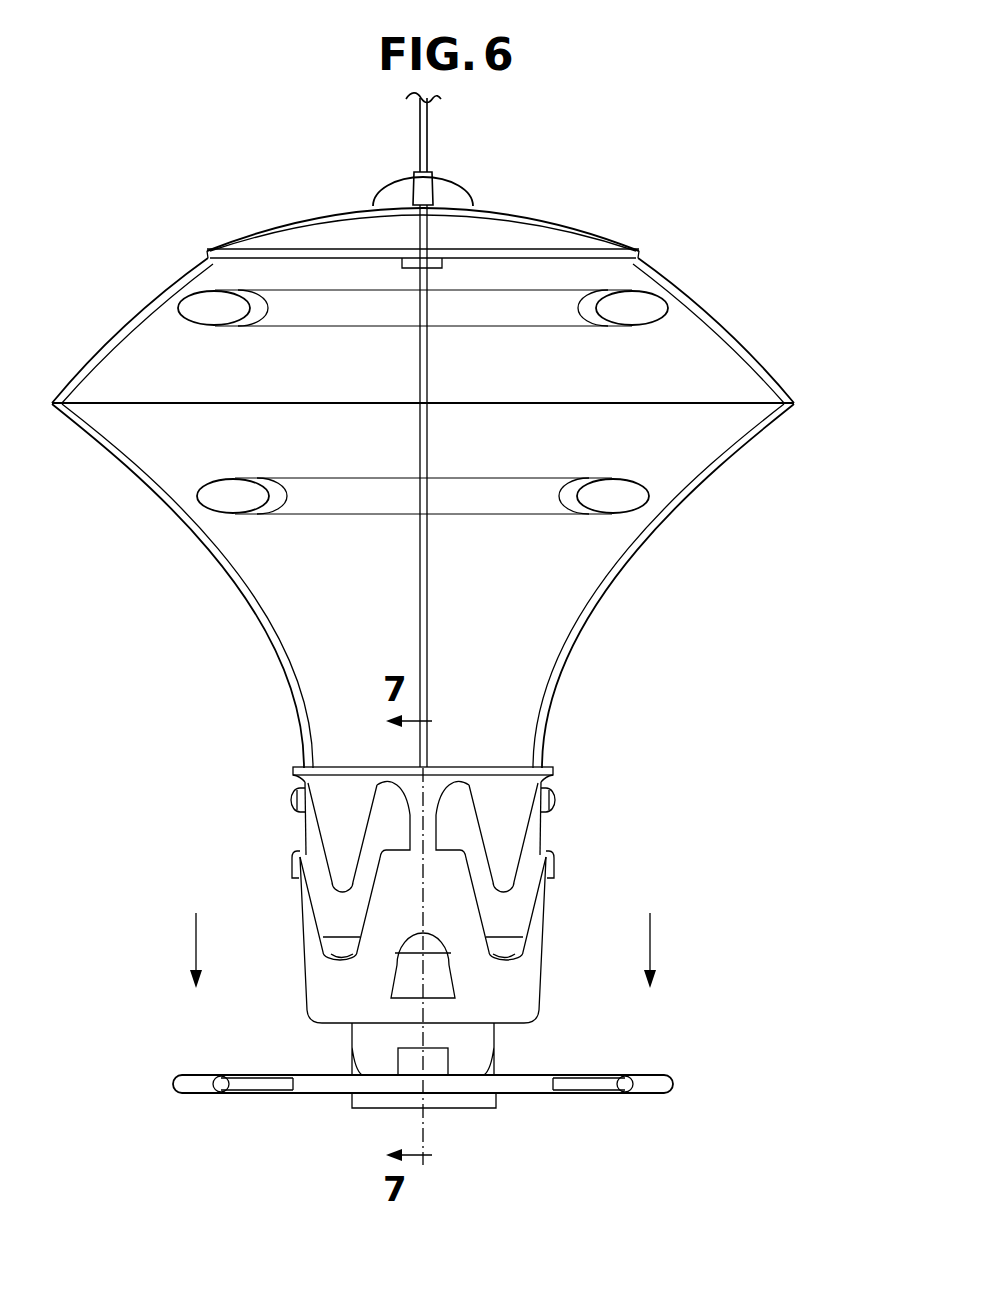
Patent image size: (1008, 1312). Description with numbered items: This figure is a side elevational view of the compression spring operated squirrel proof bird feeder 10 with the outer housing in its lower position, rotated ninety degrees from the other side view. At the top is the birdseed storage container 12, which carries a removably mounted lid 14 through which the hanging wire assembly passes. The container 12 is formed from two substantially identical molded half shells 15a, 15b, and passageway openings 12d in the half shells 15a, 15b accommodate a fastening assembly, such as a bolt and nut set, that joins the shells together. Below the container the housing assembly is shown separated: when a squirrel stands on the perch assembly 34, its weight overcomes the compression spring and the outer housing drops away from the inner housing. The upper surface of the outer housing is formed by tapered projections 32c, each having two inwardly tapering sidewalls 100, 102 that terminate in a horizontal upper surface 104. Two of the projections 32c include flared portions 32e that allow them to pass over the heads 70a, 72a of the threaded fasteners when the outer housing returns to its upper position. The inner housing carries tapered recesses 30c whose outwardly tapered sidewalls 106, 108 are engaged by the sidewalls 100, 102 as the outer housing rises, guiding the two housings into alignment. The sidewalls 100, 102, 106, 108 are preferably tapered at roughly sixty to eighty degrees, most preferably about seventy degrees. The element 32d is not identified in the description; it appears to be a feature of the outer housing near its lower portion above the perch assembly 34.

The bird feeder 10 is at (706, 199).
The birdseed storage container 12 is at (644, 566).
The passageway openings 12d is at (193, 292).
The lid 14 is at (514, 237).
The half shell 15a is at (285, 574).
The half shell 15b is at (706, 420).
The tapered recesses 30c is at (448, 810).
The tapered projections 32c is at (443, 883).
The outer cup bottom 32d is at (455, 984).
The flared portions 32e is at (296, 862).
The perch assembly 34 is at (692, 1082).
The head of threaded fastener 70a is at (296, 798).
The head of threaded fastener 72a is at (552, 798).
The inwardly tapering sidewall 100 is at (368, 915).
The inwardly tapering sidewall 102 is at (478, 915).
The horizontal upper surface 104 is at (410, 808).
The outwardly tapered sidewall 106 is at (372, 823).
The outwardly tapered sidewall 108 is at (474, 823).